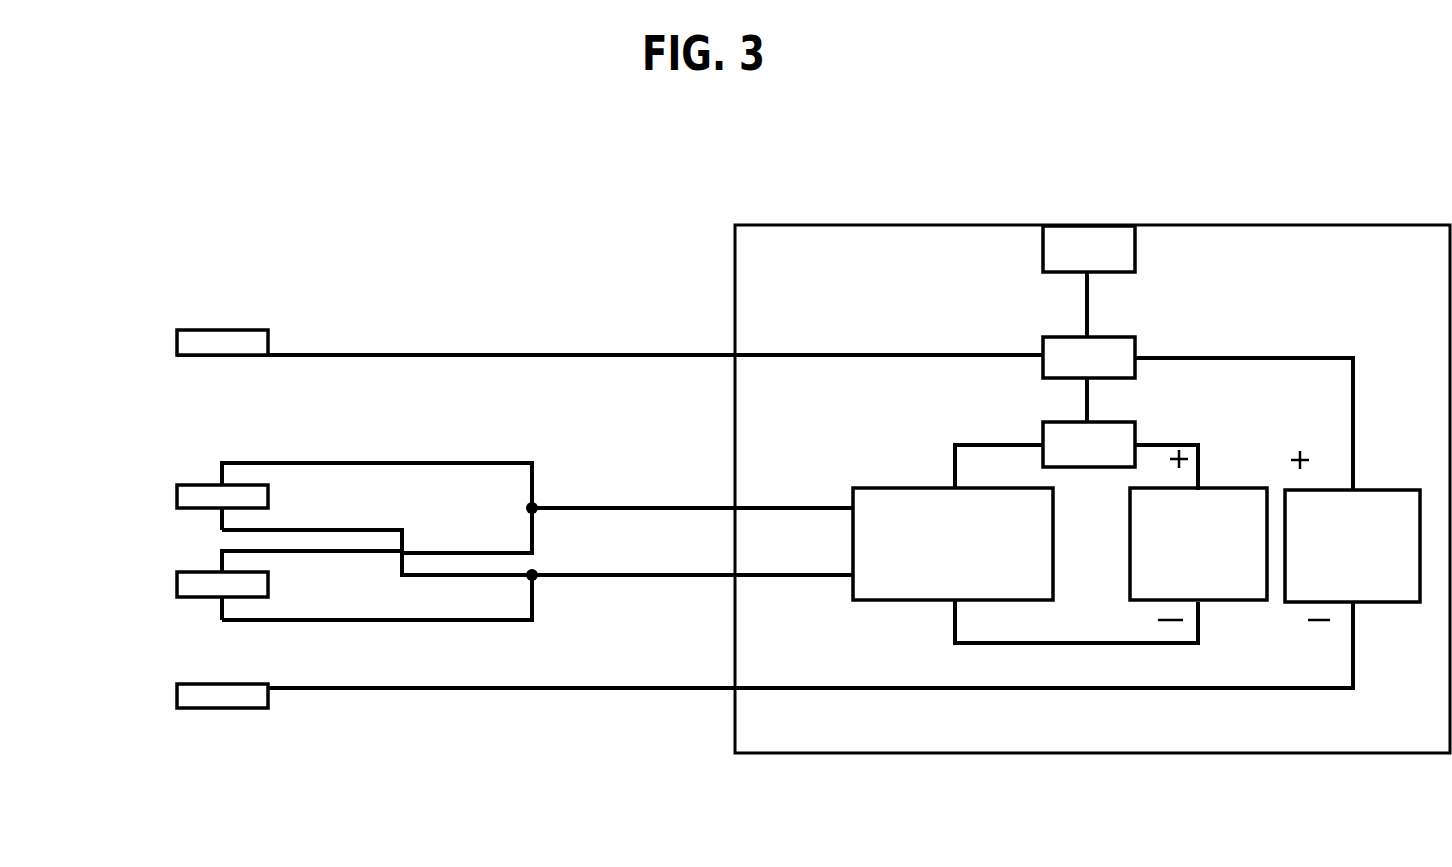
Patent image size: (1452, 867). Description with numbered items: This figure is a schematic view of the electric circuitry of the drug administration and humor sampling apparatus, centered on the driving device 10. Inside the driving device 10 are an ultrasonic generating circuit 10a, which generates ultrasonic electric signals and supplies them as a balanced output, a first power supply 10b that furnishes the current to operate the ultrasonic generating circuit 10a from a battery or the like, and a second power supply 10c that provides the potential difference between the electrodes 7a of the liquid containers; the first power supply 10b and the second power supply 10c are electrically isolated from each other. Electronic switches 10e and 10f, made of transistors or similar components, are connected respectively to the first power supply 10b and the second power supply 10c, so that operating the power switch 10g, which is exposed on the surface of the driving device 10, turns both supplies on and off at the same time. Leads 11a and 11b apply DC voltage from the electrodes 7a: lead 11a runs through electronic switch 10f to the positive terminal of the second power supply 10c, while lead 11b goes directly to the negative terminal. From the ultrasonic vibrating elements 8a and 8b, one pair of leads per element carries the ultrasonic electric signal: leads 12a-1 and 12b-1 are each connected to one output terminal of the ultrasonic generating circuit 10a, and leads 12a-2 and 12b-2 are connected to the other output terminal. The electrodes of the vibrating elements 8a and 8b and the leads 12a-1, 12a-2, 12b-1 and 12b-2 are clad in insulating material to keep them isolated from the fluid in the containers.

The electrode 7a is at (225, 328).
The ultrasonic vibrating element 8a is at (198, 483).
The ultrasonic vibrating element 8b is at (188, 600).
The driving device 10 is at (882, 223).
The ultrasonic generating circuit 10a is at (1053, 558).
The first power supply 10b is at (1220, 602).
The second power supply 10c is at (1363, 603).
The electronic switch 10e is at (1135, 432).
The electronic switch 10f is at (1135, 340).
The power switch 10g is at (1135, 242).
The lead 11a is at (432, 352).
The lead 11b is at (433, 687).
The lead 12a-1 is at (315, 462).
The lead 12a-2 is at (315, 528).
The lead 12b-1 is at (263, 555).
The lead 12b-2 is at (292, 620).